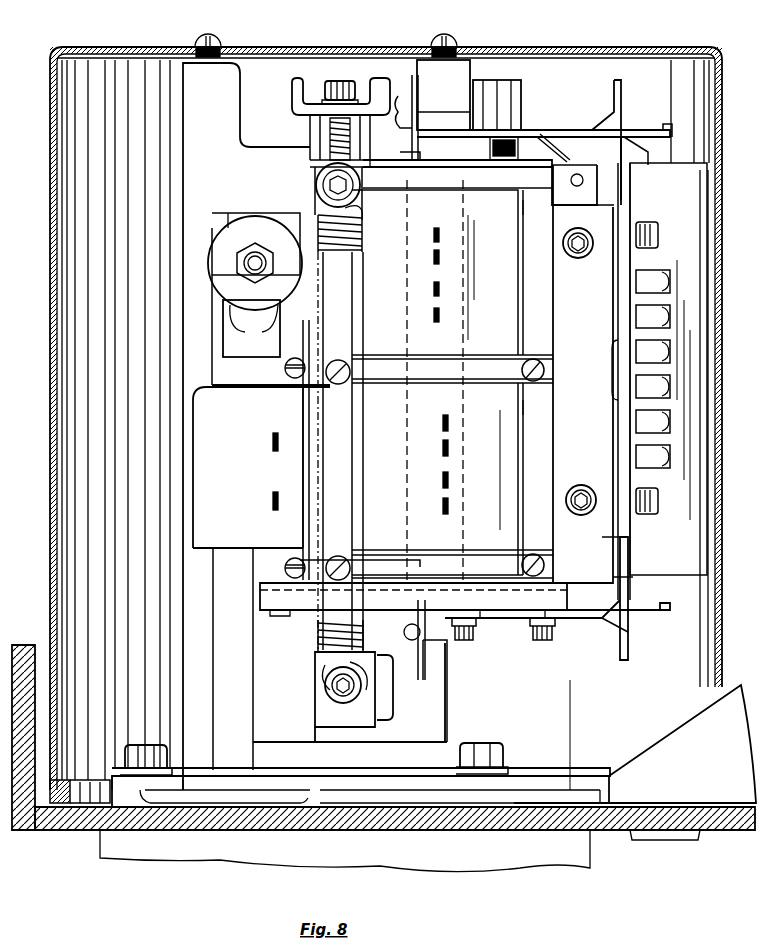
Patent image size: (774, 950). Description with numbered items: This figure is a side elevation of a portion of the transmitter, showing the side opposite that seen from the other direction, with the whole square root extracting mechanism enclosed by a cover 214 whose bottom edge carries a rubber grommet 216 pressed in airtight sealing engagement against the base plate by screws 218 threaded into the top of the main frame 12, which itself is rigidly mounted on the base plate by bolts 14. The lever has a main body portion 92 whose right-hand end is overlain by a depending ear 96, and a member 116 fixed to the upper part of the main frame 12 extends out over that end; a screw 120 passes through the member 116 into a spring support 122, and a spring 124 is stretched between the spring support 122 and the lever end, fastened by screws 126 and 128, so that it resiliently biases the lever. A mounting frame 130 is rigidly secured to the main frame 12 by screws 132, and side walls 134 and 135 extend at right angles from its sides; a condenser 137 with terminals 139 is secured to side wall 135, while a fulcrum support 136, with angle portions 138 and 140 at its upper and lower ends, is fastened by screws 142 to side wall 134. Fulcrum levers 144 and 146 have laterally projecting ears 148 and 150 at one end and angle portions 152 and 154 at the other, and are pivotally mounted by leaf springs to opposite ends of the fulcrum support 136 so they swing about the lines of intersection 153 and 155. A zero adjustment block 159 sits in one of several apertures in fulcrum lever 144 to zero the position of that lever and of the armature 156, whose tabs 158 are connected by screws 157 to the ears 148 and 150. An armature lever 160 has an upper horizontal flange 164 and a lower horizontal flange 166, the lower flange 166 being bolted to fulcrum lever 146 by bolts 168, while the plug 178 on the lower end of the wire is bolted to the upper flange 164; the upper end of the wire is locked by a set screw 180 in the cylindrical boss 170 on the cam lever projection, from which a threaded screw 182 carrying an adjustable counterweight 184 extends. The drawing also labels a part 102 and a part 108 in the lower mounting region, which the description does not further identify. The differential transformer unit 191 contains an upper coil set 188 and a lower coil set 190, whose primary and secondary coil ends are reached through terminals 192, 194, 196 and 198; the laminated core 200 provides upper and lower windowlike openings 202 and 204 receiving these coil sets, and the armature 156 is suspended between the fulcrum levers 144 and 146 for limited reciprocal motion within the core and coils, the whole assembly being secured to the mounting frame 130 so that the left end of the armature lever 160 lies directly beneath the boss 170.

The main frame 12 is at (228, 120).
The bolts 14 is at (148, 745).
The main body portion 92 is at (392, 700).
The depending ear 96 is at (314, 704).
The mounting plate 102 is at (568, 592).
The terminal 108 is at (476, 630).
The member 116 is at (300, 90).
The screw 120 is at (346, 82).
The spring support 122 is at (365, 168).
The spring 124 is at (360, 228).
The screw 126 is at (318, 186).
The screw 128 is at (344, 708).
The mounting frame 130 is at (596, 328).
The screws 132 is at (578, 258).
The side wall 134 is at (622, 430).
The side wall 135 is at (310, 412).
The fulcrum support 136 is at (606, 162).
The condenser 137 is at (240, 472).
The angle portion 138 is at (665, 128).
The terminals 139 is at (276, 492).
The angle portion 140 is at (668, 600).
The screws 142 is at (660, 236).
The fulcrum lever 144 is at (584, 108).
The fulcrum lever 146 is at (594, 618).
The ear 148 is at (424, 106).
The ear 150 is at (448, 632).
The angle portion 152 is at (624, 100).
The line of intersection 153 is at (624, 128).
The angle portion 154 is at (630, 646).
The line of intersection 155 is at (622, 600).
The armature 156 is at (430, 190).
The screws 157 is at (400, 104).
The tabs 158 is at (422, 152).
The zero adjustment block 159 is at (522, 92).
The armature lever 160 is at (506, 586).
The upper horizontal flange 164 is at (266, 592).
The lower horizontal flange 166 is at (536, 606).
The bolts 168 is at (542, 630).
The cylindrical boss 170 is at (280, 212).
The plug 178 is at (262, 568).
The set screw 180 is at (264, 310).
The threaded screw 182 is at (255, 262).
The counterweight 184 is at (224, 236).
The upper coil set 188 is at (500, 278).
The lower coil set 190 is at (496, 462).
The differential transformer unit 191 is at (512, 312).
The terminals 192 is at (434, 238).
The terminals 194 is at (434, 288).
The terminals 196 is at (442, 430).
The terminals 198 is at (442, 488).
The core 200 is at (546, 356).
The upper windowlike opening 202 is at (522, 230).
The lower windowlike opening 204 is at (522, 430).
The cover 214 is at (648, 48).
The rubber grommet 216 is at (92, 774).
The screws 218 is at (212, 42).